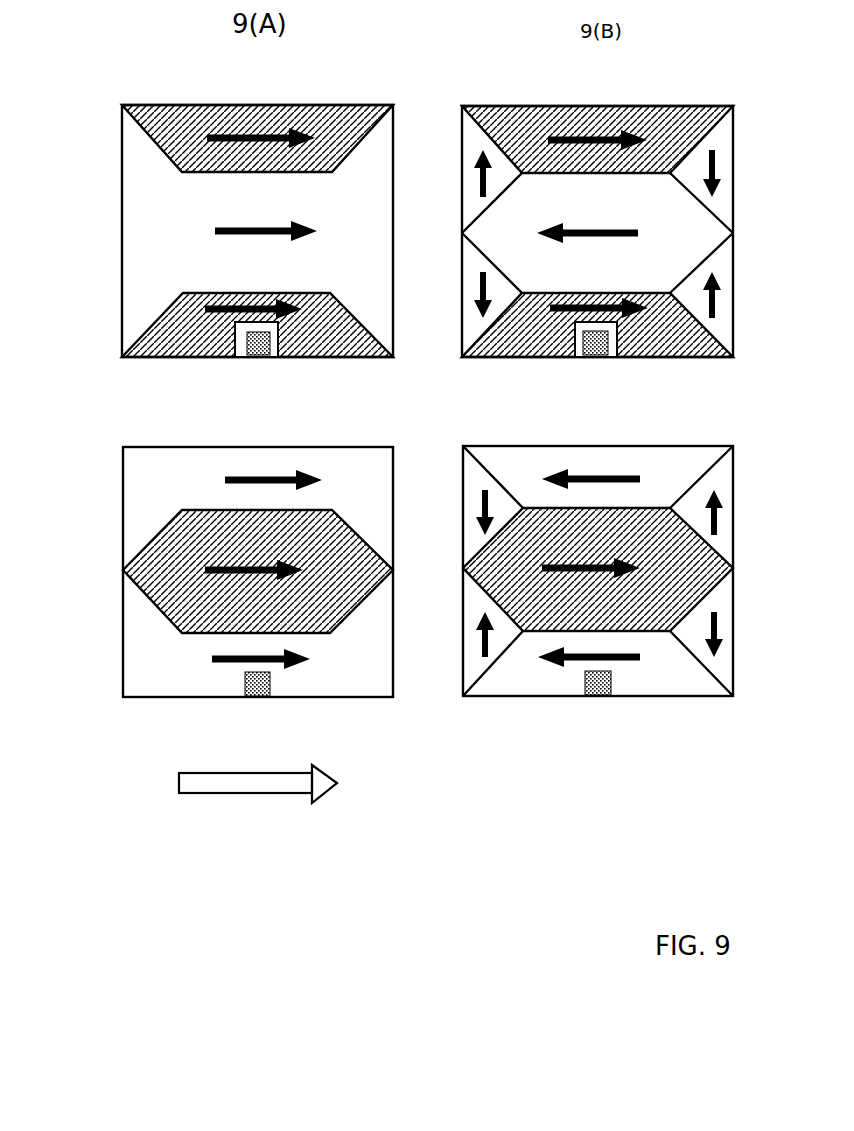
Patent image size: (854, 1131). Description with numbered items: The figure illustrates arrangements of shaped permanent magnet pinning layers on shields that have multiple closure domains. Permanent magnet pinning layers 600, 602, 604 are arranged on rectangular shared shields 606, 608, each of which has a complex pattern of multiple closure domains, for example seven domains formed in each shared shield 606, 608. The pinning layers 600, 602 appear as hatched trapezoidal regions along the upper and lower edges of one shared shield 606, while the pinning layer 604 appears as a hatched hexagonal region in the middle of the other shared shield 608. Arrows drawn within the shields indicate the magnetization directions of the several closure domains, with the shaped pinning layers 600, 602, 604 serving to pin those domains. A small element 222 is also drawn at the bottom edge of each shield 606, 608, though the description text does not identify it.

The permanent magnet pinning layer 600 is at (335, 135).
The permanent magnet pinning layer 602 is at (177, 327).
The permanent magnet pinning layer 604 is at (150, 575).
The rectangular shared shield 606 is at (123, 198).
The rectangular shared shield 608 is at (155, 473).
The read sensor 222 is at (555, 357).